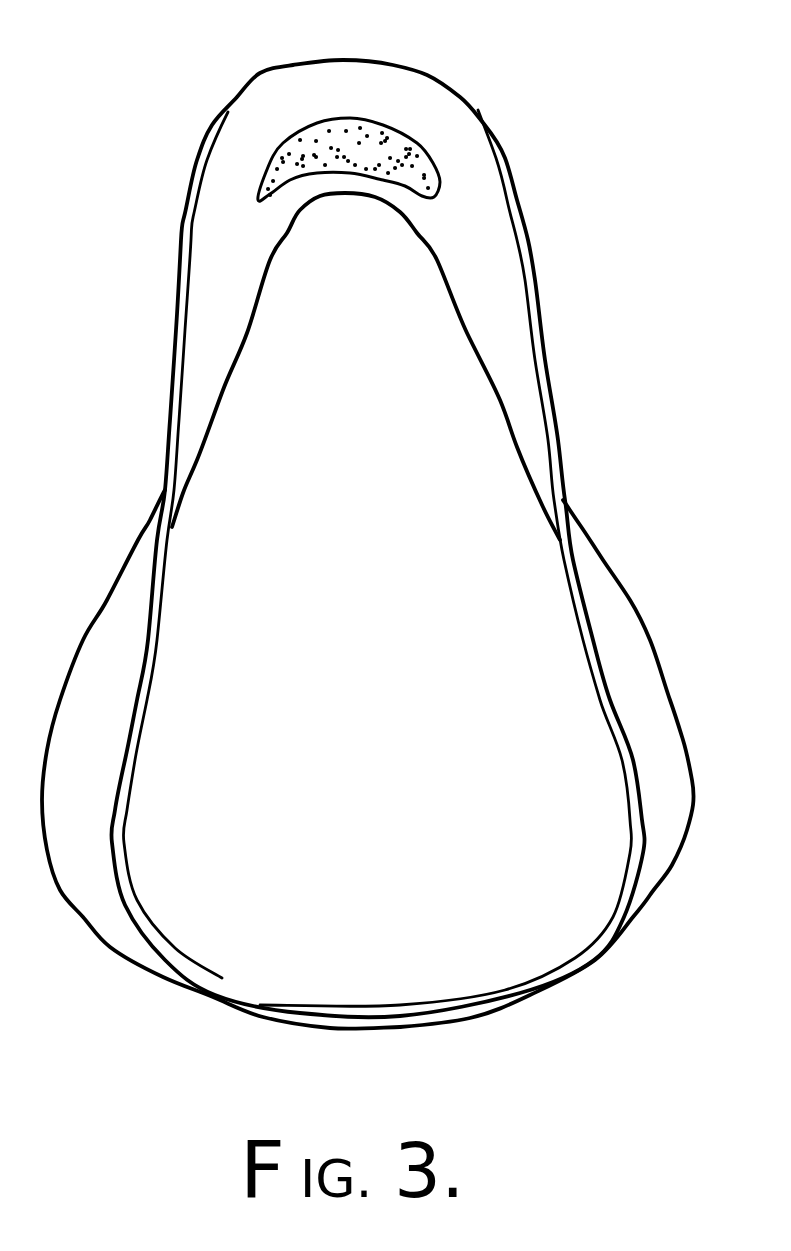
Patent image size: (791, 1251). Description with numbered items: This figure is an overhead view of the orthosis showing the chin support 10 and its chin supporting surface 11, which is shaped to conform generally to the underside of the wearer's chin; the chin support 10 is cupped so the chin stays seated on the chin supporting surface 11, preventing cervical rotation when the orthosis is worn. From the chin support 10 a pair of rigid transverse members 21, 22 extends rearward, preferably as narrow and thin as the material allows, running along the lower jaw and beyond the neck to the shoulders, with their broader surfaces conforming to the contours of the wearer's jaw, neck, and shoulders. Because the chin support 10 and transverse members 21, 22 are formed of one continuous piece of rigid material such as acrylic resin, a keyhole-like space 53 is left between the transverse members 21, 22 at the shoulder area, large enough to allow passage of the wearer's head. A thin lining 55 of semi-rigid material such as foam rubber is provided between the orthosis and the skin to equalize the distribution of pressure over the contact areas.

The chin support 10 is at (434, 110).
The chin supporting surface 11 is at (328, 145).
The rigid transverse member 21 is at (532, 452).
The rigid transverse member 22 is at (186, 457).
The keyhole-like space 53 is at (440, 722).
The thin lining 55 is at (527, 239).